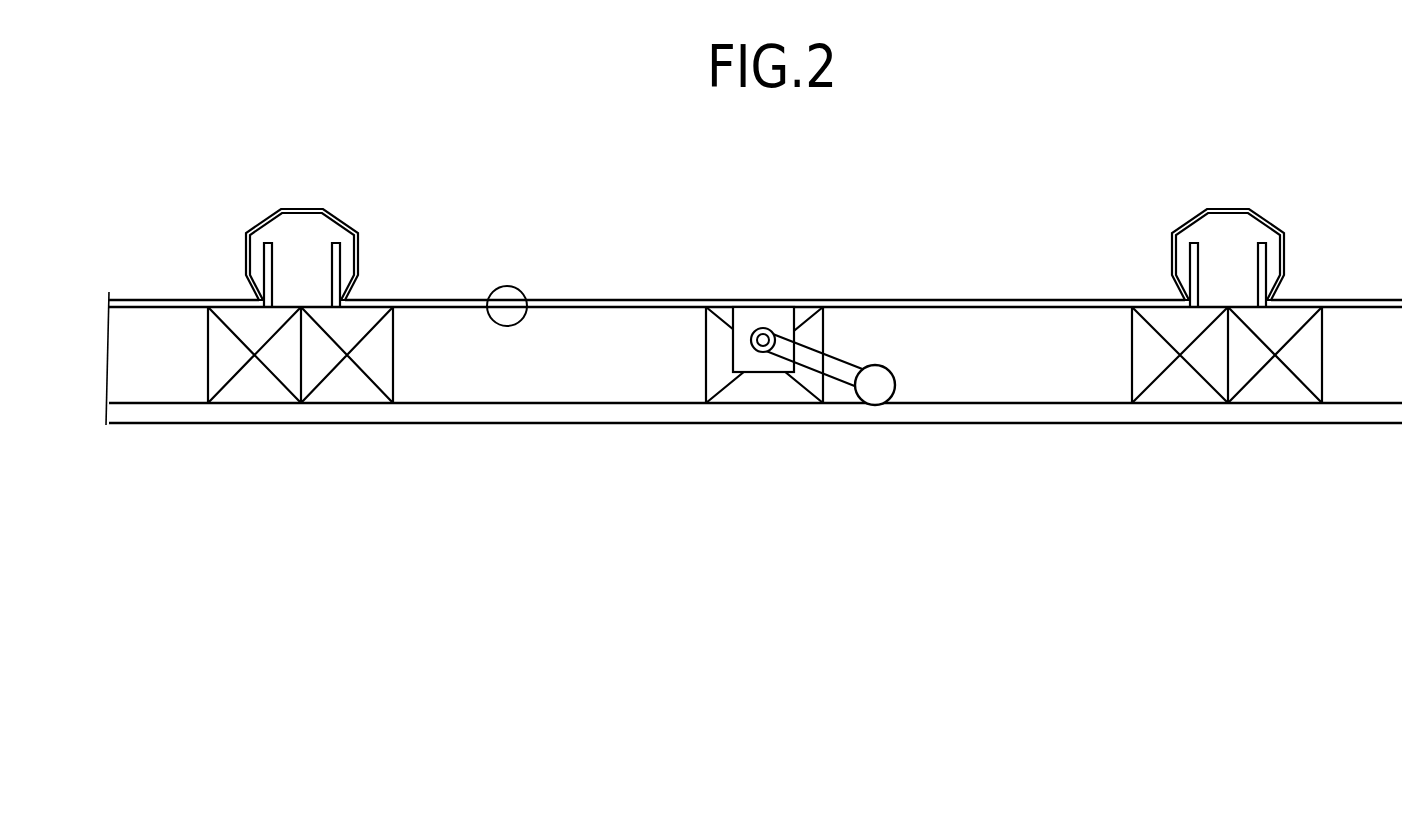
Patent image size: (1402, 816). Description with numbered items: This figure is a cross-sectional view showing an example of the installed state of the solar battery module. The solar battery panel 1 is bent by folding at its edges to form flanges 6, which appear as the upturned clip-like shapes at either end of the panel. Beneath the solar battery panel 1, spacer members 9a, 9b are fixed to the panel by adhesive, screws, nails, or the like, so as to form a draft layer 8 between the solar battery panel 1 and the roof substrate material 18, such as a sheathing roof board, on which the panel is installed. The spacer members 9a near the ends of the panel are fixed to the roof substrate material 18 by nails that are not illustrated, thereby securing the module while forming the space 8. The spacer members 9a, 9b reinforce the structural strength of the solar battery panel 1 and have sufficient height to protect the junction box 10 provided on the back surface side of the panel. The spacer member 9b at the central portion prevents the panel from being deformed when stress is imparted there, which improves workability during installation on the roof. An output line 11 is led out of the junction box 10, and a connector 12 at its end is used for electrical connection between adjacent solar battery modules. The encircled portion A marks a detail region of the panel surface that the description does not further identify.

The solar battery panel 1 is at (1043, 302).
The flange 6 is at (342, 260).
The draft layer 8 is at (1003, 365).
The spacer member 9a is at (362, 400).
The spacer member 9b is at (752, 400).
The junction box 10 is at (748, 318).
The output line 11 is at (842, 368).
The connector 12 is at (884, 378).
The roof substrate material 18 is at (1070, 415).
The portion A is at (508, 286).